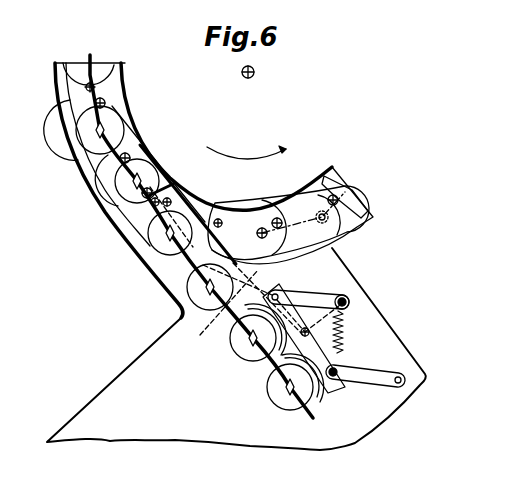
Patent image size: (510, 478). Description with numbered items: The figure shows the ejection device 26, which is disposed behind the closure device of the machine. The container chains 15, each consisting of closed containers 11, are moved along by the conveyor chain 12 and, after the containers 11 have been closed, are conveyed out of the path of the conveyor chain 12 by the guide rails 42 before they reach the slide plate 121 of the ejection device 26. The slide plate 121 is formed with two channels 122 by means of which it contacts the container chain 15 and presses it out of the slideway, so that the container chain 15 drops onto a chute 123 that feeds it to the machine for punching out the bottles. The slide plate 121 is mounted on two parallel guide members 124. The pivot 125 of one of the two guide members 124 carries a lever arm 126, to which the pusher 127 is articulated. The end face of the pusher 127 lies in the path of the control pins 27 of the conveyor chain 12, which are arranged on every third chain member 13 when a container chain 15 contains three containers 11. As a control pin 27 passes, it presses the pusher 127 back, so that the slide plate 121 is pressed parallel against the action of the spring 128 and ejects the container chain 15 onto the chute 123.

The containers 11 is at (82, 133).
The conveyor chain 12 is at (123, 80).
The chain member 13 is at (143, 152).
The container chain 15 is at (82, 158).
The ejection device 26 is at (373, 310).
The control pins 27 is at (145, 212).
The guide rails 42 is at (189, 217).
The slide plate 121 is at (320, 321).
The channels 122 is at (282, 373).
The chute 123 is at (150, 388).
The guide members 124 is at (296, 298).
The pivot 125 is at (348, 300).
The lever arm 126 is at (339, 316).
The pusher 127 is at (172, 187).
The spring 128 is at (337, 352).